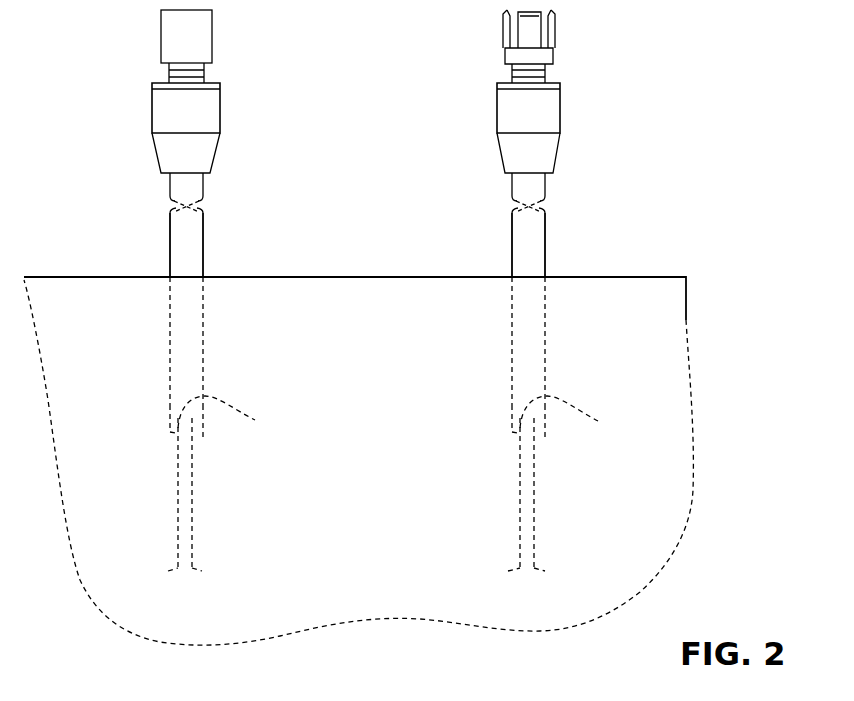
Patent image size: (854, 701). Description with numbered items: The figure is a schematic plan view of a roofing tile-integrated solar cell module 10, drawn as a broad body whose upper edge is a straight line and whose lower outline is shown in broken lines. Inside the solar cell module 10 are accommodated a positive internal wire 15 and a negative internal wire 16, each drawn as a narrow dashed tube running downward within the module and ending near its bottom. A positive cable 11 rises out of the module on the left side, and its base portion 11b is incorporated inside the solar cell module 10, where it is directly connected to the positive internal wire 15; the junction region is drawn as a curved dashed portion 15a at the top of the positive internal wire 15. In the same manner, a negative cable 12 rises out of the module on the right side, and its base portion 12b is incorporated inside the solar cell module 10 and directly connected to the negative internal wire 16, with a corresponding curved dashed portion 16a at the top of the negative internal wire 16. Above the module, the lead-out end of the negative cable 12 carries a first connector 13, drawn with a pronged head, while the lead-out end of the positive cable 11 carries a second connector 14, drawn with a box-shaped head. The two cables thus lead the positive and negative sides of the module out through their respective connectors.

The roofing tile-integrated solar cell module 10 is at (688, 318).
The positive cable 11 is at (204, 243).
The base portion of positive cable 11b is at (168, 432).
The negative cable 12 is at (546, 243).
The base portion of negative cable 12b is at (510, 432).
The first connector 13 is at (562, 108).
The second connector 14 is at (221, 108).
The positive internal wire 15 is at (196, 518).
The curved end of first inner tube 15a is at (257, 421).
The negative internal wire 16 is at (540, 518).
The curved end of second inner tube 16a is at (600, 422).